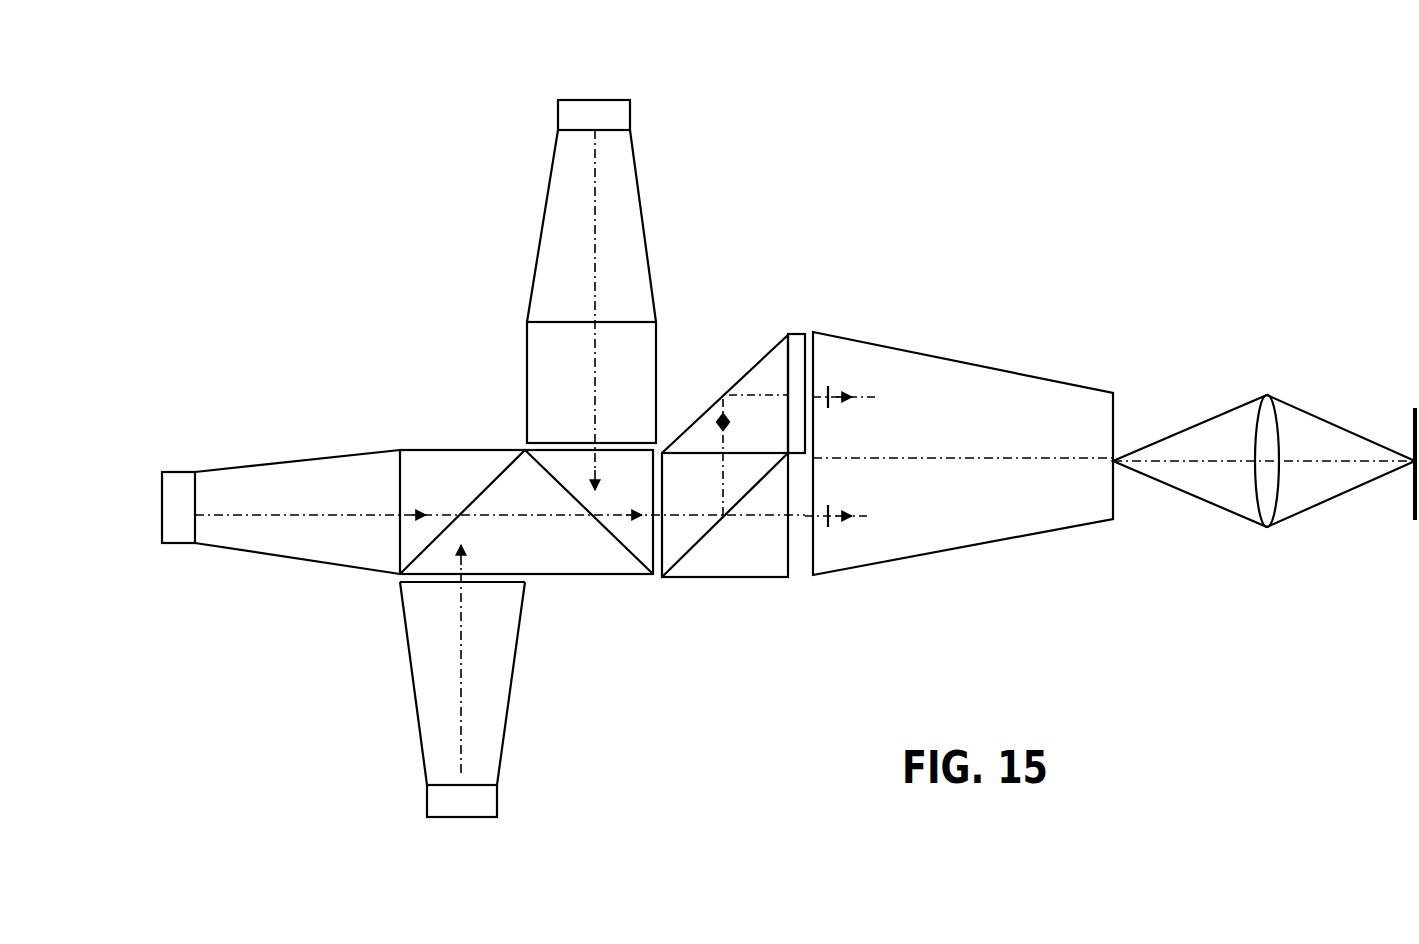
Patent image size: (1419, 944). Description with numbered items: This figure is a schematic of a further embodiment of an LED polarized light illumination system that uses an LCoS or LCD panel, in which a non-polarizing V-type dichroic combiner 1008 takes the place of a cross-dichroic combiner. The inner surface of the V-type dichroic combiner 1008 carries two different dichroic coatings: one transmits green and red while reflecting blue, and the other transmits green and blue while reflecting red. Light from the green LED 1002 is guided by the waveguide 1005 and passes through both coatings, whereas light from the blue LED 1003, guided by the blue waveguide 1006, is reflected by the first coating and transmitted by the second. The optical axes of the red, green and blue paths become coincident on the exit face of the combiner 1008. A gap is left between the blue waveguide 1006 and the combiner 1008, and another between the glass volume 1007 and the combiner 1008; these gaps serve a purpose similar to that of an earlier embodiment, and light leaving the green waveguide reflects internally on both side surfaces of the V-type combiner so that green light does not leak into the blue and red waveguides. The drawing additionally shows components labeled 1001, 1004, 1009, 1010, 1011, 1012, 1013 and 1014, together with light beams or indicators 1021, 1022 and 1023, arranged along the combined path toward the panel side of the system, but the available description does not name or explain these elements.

The light source 1001 is at (613, 122).
The green LED 1002 is at (183, 537).
The blue LED 1003 is at (445, 790).
The tapered light guide 1004 is at (562, 243).
The waveguide 1005 is at (320, 545).
The waveguide 1006 is at (497, 655).
The glass volume 1007 is at (556, 416).
The V-type dichroic combiner 1008 is at (612, 548).
The polarizing beam splitter cube 1009 is at (762, 555).
The prism 1010 is at (762, 387).
The wave plate 1011 is at (798, 367).
The tapered integrator 1012 is at (1057, 527).
The projection lens 1013 is at (1270, 410).
The screen 1014 is at (1413, 425).
The light beam 1021 is at (838, 528).
The light beam 1022 is at (700, 405).
The light beam 1023 is at (835, 386).